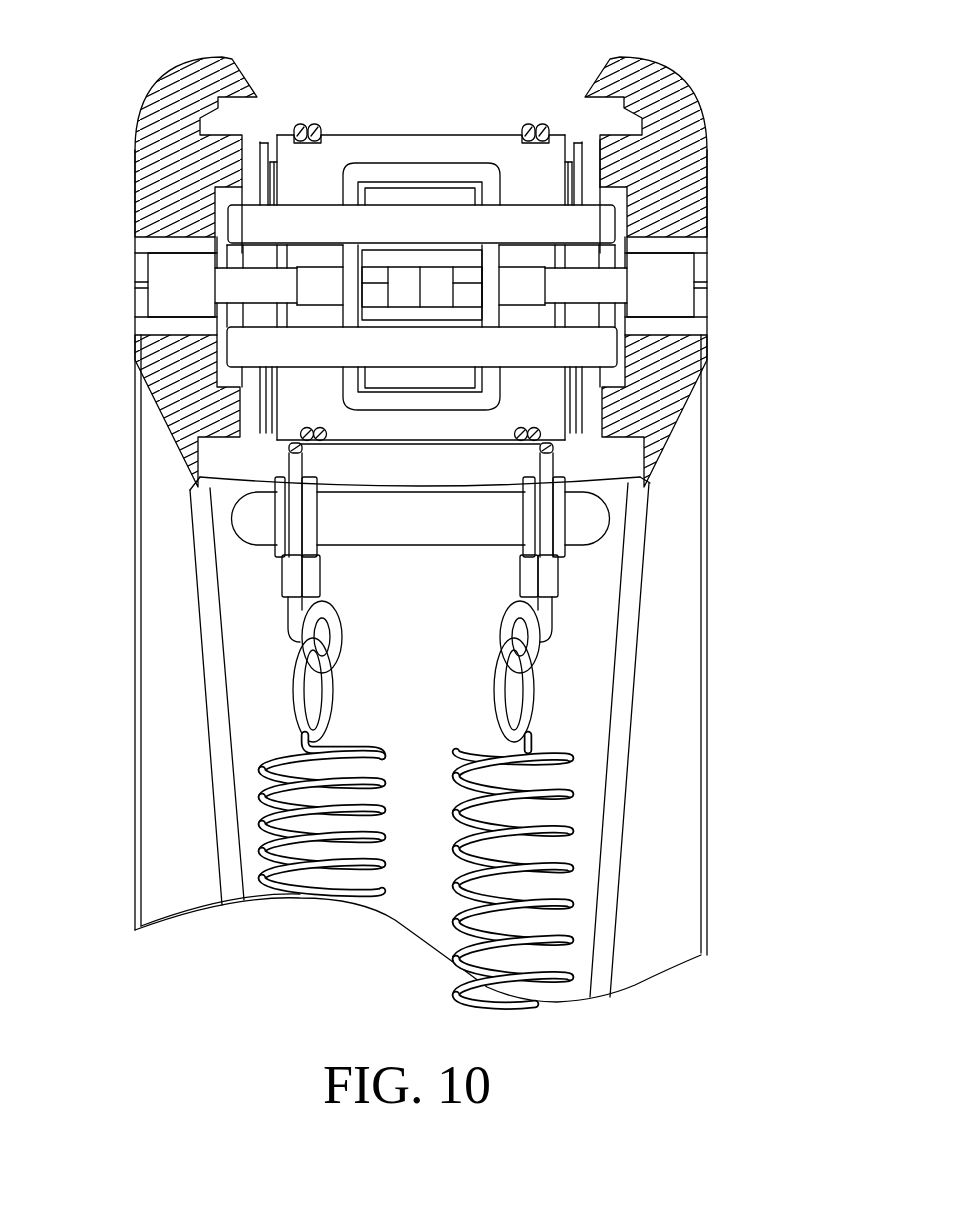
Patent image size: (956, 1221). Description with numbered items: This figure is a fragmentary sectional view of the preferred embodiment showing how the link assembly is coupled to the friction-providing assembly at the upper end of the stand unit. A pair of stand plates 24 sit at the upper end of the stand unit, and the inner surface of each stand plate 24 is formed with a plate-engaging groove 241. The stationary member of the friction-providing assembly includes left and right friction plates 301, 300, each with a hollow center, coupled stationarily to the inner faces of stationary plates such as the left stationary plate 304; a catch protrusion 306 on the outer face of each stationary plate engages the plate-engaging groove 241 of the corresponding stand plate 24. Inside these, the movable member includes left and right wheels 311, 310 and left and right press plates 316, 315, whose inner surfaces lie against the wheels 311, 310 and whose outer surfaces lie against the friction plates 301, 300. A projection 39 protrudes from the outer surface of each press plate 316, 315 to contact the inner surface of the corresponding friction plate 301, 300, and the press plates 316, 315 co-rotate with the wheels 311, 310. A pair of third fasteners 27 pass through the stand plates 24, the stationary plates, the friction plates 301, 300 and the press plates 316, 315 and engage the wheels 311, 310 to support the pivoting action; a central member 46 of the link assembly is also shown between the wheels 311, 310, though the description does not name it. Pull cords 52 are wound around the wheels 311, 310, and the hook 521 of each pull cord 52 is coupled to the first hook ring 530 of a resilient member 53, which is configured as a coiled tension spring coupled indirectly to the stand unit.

The stand plates 24 is at (707, 163).
The plate-engaging groove 241 is at (620, 202).
The third fasteners 27 is at (670, 275).
The projection 39 is at (272, 388).
The cross bar 46 is at (423, 226).
The pull cords 52 is at (530, 124).
The resilient members 53 is at (570, 867).
The right friction plate 300 is at (576, 143).
The left friction plate 301 is at (265, 145).
The left stationary plate 304 is at (243, 197).
The catch protrusion 306 is at (597, 377).
The right wheel 310 is at (555, 150).
The left wheel 311 is at (310, 168).
The right press plate 315 is at (568, 145).
The left press plate 316 is at (274, 165).
The hook 521 is at (545, 620).
The first hook ring 530 is at (510, 700).